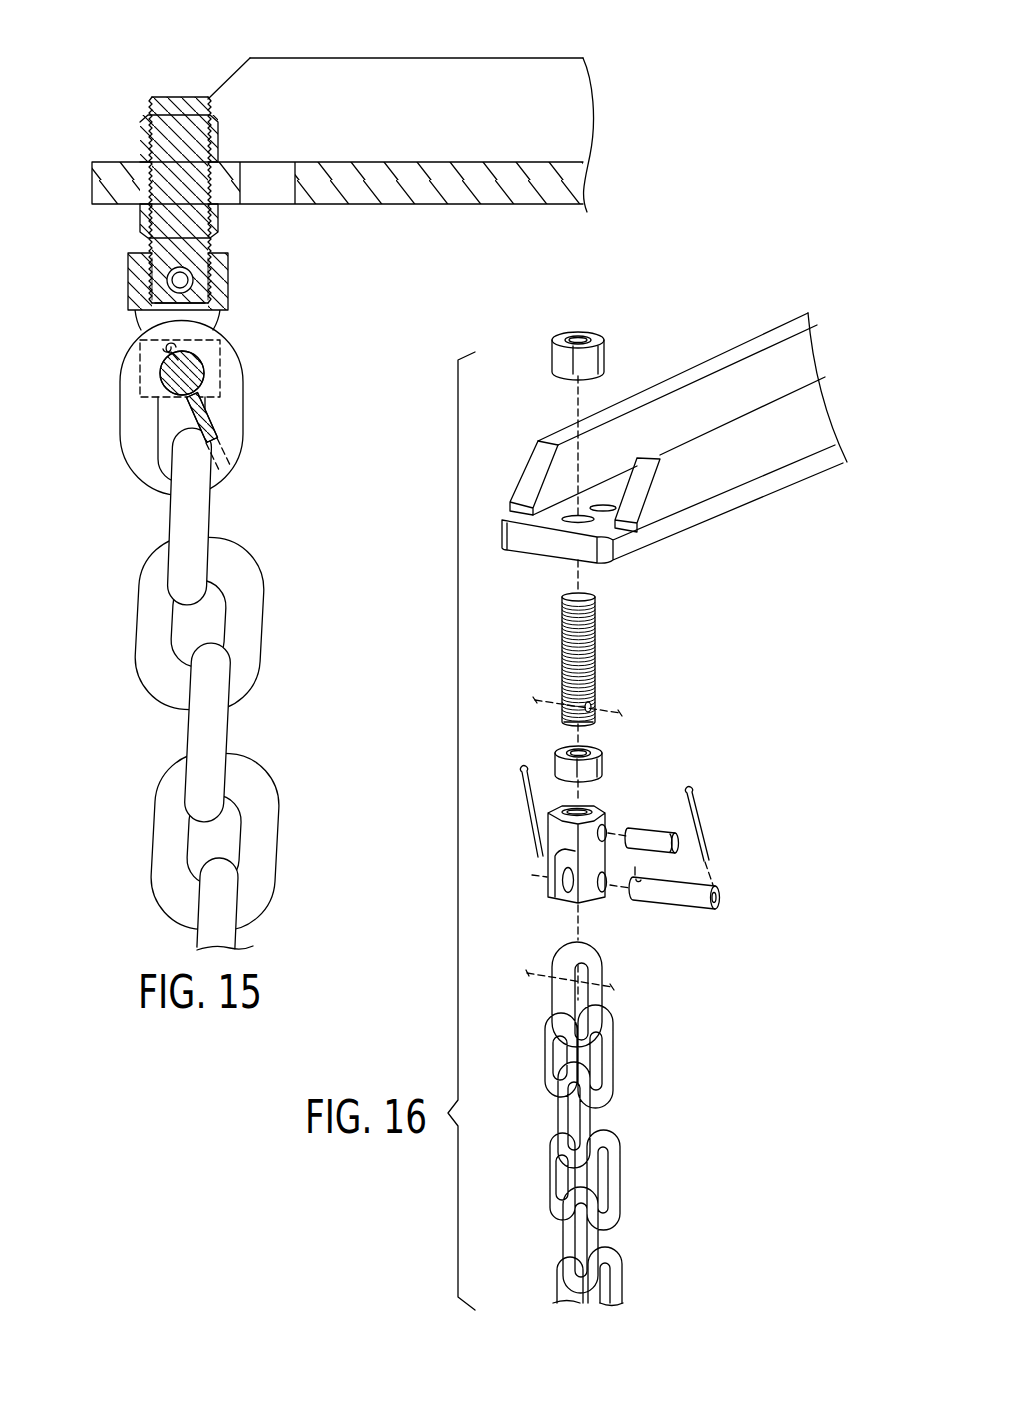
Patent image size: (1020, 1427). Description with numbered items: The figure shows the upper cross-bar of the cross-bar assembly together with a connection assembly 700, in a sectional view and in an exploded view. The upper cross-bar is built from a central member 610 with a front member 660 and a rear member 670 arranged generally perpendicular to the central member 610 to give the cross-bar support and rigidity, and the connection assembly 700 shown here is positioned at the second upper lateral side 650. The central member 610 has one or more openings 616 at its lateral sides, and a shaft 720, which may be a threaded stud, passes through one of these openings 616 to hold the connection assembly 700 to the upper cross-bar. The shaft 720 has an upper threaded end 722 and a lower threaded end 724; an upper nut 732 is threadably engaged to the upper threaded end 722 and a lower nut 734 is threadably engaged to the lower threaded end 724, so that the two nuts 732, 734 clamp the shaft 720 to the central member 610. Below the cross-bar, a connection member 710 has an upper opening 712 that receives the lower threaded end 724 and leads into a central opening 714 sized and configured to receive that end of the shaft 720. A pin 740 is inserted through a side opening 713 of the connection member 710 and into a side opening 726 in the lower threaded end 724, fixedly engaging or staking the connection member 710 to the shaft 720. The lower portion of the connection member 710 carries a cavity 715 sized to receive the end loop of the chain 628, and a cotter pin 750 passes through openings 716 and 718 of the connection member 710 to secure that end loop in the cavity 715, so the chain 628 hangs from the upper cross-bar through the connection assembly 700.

In FIG. 15, the connection assembly 700 is at (78, 142).
In FIG. 16, the connection assembly 700 is at (706, 649).
In FIG. 15, the central member 610 is at (452, 193).
In FIG. 16, the central member 610 is at (698, 515).
In FIG. 16, the openings 616 is at (612, 500).
In FIG. 15, the chain 628 is at (123, 435).
In FIG. 15, the second upper lateral side 650 is at (563, 125).
In FIG. 16, the second upper lateral side 650 is at (808, 427).
In FIG. 16, the front member 660 is at (747, 463).
In FIG. 15, the rear member 670 is at (448, 73).
In FIG. 16, the rear member 670 is at (713, 395).
In FIG. 15, the connection member 710 is at (220, 302).
In FIG. 16, the connection member 710 is at (555, 842).
In FIG. 15, the upper opening 712 is at (207, 253).
In FIG. 16, the upper opening 712 is at (570, 810).
In FIG. 16, the side opening 713 is at (605, 828).
In FIG. 15, the central opening 714 is at (190, 282).
In FIG. 16, the cavity 715 is at (567, 901).
In FIG. 16, the opening 716 is at (600, 888).
In FIG. 16, the opening 718 is at (565, 885).
In FIG. 15, the shaft 720 is at (168, 112).
In FIG. 16, the shaft 720 is at (595, 643).
In FIG. 15, the upper threaded end 722 is at (182, 122).
In FIG. 16, the upper threaded end 722 is at (595, 608).
In FIG. 15, the lower threaded end 724 is at (195, 303).
In FIG. 16, the lower threaded end 724 is at (583, 722).
In FIG. 16, the side opening 726 is at (595, 692).
In FIG. 15, the upper nut 732 is at (148, 115).
In FIG. 16, the upper nut 732 is at (598, 335).
In FIG. 15, the lower nut 734 is at (217, 218).
In FIG. 16, the lower nut 734 is at (568, 747).
In FIG. 16, the pin 740 is at (655, 835).
In FIG. 16, the cotter pin 750 is at (720, 876).